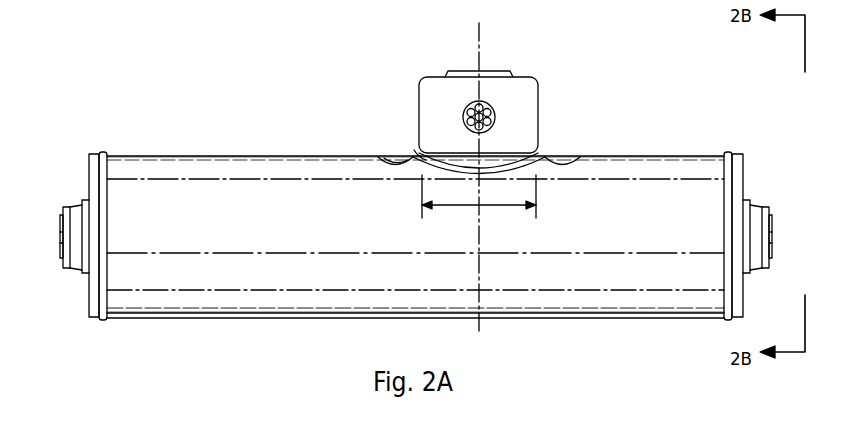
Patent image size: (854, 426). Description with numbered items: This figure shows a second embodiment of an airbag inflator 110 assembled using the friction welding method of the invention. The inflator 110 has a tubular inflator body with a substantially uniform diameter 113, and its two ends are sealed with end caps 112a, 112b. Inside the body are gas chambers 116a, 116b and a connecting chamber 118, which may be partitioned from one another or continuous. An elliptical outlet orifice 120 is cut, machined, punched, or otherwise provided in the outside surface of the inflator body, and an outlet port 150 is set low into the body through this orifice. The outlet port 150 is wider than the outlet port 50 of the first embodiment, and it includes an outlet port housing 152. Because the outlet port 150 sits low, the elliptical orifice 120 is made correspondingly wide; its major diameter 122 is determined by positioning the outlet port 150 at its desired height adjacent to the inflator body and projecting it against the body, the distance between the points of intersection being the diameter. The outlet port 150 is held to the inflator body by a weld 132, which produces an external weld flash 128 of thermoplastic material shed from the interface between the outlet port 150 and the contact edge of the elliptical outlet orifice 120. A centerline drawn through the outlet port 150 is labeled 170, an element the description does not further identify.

The outlet port 50 is at (171, 126).
The inflator 110 is at (658, 90).
The end cap 112a is at (735, 156).
The end cap 112b is at (95, 153).
The substantially uniform diameter 113 is at (68, 155).
The gas chamber 116a is at (657, 157).
The gas chamber 116b is at (232, 160).
The connecting chamber 118 is at (467, 272).
The elliptical outlet orifice 120 is at (558, 162).
The major diameter 122 is at (488, 212).
The external weld flash 128 is at (418, 153).
The weld 132 is at (387, 160).
The outlet port 150 is at (532, 46).
The outlet port housing 152 is at (528, 92).
The center axis 170 is at (481, 27).